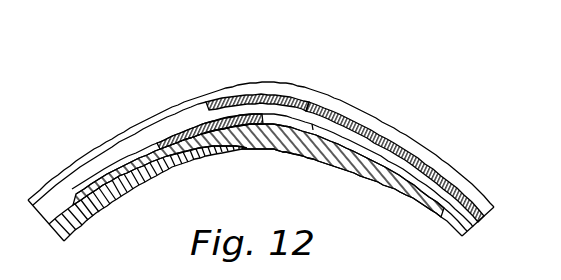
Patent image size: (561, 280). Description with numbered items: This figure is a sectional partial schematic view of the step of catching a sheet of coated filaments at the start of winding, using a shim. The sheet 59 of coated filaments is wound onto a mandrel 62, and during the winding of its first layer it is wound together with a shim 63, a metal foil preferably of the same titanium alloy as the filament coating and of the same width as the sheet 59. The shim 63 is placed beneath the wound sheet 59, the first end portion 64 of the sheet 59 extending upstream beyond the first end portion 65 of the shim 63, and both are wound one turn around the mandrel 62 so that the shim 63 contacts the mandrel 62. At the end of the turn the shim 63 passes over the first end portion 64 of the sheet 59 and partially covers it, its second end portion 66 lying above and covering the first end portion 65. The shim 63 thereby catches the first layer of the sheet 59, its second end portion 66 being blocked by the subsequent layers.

The sheet of coated filaments 59 is at (163, 91).
The mandrel 62 is at (412, 184).
The shim 63 is at (382, 142).
The first end portion of the sheet 64 is at (282, 137).
The first end portion of the shim 65 is at (235, 129).
The second end portion of the shim 66 is at (220, 97).